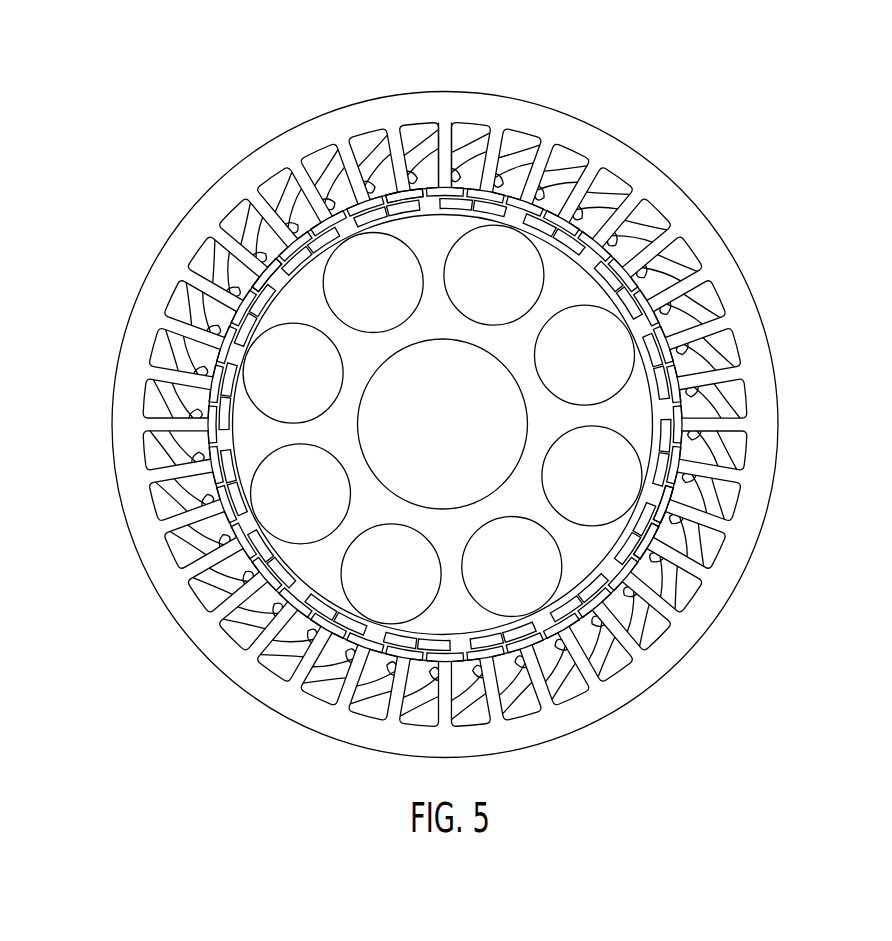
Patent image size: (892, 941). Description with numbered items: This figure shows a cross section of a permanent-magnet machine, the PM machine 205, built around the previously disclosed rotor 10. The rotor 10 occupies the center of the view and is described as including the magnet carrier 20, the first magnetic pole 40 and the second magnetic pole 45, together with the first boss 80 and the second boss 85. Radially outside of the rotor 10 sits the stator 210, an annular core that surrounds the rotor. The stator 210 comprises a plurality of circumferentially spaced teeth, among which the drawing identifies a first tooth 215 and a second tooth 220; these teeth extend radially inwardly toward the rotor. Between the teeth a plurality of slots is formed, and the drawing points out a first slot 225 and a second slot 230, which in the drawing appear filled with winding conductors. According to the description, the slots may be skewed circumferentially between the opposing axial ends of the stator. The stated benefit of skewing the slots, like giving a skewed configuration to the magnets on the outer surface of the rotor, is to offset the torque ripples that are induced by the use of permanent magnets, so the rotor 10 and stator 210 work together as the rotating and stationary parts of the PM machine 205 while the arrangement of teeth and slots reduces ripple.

The rotor 10 is at (583, 283).
The magnet carrier 20 is at (260, 445).
The first magnetic pole 40 is at (232, 352).
The second magnetic pole 45 is at (278, 218).
The first boss 80 is at (275, 265).
The second boss 85 is at (428, 196).
The PM machine 205 is at (97, 88).
The stator 210 is at (615, 137).
The first tooth 215 is at (442, 162).
The second tooth 220 is at (485, 152).
The first slot 225 is at (675, 497).
The second slot 230 is at (653, 540).